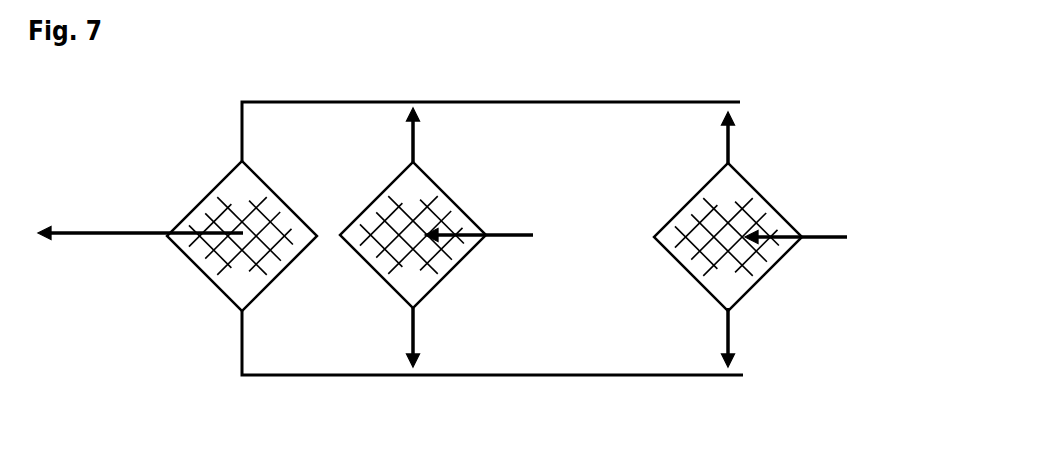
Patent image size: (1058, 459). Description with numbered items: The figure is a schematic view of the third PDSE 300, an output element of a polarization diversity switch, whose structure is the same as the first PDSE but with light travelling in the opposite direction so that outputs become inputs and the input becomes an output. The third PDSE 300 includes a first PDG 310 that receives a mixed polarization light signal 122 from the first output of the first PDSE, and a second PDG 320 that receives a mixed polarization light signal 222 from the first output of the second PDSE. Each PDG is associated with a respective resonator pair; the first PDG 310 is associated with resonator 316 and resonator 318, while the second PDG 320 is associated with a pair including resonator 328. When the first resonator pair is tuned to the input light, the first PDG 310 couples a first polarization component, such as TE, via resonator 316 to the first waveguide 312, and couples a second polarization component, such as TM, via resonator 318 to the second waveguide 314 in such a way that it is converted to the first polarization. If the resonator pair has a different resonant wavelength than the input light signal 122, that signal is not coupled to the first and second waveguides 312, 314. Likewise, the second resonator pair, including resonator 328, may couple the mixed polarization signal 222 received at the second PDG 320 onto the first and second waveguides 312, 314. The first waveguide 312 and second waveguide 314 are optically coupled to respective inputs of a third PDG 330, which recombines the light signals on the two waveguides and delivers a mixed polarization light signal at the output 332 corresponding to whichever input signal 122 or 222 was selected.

The third PDSE 300 is at (810, 90).
The first PDG 310 is at (673, 222).
The first waveguide 312 is at (543, 100).
The second waveguide 314 is at (530, 377).
The resonator 316 is at (696, 140).
The resonator 318 is at (697, 340).
The second PDG 320 is at (357, 215).
The resonator 328 is at (381, 240).
The third PDG 330 is at (220, 181).
The output 332 is at (120, 237).
The mixed polarization light signal 222 is at (503, 240).
The mixed polarization light signal 122 is at (822, 238).